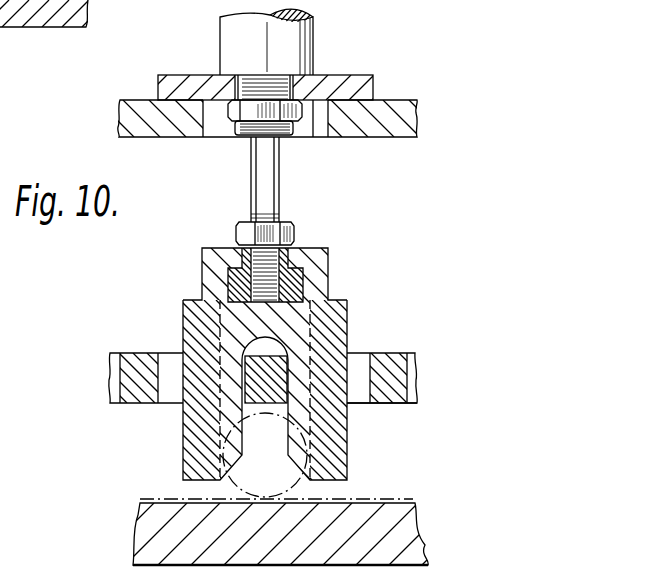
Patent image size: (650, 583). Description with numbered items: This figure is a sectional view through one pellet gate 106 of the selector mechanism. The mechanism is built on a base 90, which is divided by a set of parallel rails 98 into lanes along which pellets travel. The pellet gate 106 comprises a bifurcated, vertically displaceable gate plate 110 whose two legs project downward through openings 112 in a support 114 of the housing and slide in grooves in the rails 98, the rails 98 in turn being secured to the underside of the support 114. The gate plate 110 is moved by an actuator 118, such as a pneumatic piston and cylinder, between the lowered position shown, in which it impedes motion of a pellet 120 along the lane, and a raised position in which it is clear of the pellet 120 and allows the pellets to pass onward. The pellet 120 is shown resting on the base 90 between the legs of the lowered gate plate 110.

The base 90 is at (158, 528).
The rails 98 is at (187, 432).
The pellet gate 106 is at (323, 205).
The gate plate 110 is at (303, 337).
The openings 112 is at (167, 354).
The support 114 is at (395, 407).
The actuator 118 is at (300, 45).
The pellet 120 is at (223, 484).